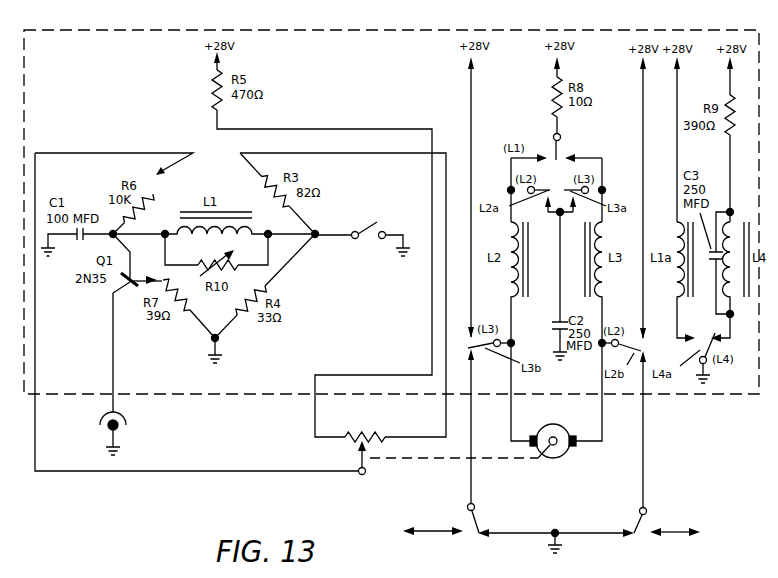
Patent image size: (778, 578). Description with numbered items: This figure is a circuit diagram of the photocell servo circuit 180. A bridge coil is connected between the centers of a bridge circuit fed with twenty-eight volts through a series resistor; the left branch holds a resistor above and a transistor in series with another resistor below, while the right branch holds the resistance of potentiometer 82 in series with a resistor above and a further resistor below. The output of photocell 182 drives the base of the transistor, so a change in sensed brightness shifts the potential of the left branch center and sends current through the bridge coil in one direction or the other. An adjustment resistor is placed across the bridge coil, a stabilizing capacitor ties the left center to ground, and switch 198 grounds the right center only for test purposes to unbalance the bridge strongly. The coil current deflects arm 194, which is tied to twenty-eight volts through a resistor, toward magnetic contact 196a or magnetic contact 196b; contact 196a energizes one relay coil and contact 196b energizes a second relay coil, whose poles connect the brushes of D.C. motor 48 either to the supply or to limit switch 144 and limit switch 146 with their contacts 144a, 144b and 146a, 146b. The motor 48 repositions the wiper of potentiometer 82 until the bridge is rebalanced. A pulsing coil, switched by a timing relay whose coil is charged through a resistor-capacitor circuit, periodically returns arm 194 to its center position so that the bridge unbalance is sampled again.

The photocell servo circuit 180 is at (391, 212).
The photocell 182 is at (128, 421).
The switch 198 is at (370, 227).
The magnetic contact 196a is at (540, 152).
The arm 194 is at (562, 143).
The magnetic contact 196b is at (572, 155).
The potentiometer 82 is at (368, 433).
The D.C. motor 48 is at (562, 458).
The limit switch 144 is at (477, 518).
The limit switch contact 144a is at (483, 535).
The limit switch contact 144b is at (452, 536).
The limit switch 146 is at (633, 518).
The limit switch contact 146a is at (630, 534).
The limit switch contact 146b is at (656, 538).